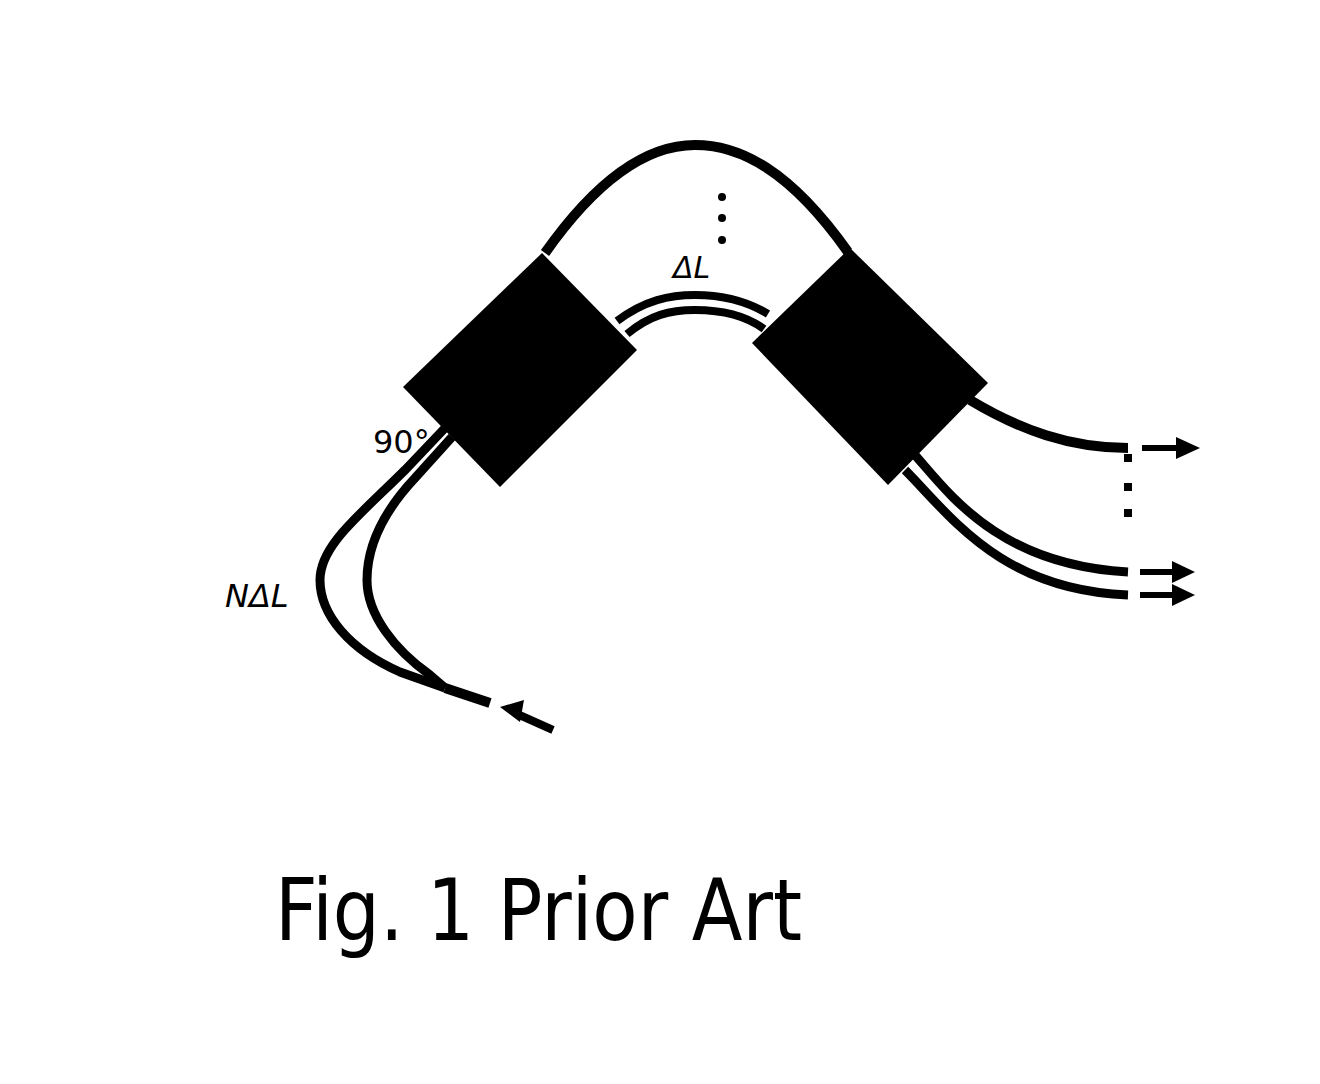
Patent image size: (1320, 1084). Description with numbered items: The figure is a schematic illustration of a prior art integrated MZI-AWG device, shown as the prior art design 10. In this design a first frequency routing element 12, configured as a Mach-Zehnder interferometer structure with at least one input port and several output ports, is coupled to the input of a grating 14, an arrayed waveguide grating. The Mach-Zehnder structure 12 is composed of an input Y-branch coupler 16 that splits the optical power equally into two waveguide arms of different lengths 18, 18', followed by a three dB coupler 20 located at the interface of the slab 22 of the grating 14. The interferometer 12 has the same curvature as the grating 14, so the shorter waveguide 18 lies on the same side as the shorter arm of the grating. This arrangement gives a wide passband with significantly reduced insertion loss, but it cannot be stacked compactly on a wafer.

The prior art design 10 is at (1108, 232).
The first frequency routing element 12 is at (278, 671).
The grating 14 is at (718, 132).
The input Y-branch coupler 16 is at (450, 693).
The shorter waveguide arm 18 is at (412, 562).
The longer waveguide arm 18' is at (319, 558).
The 3 dB coupler 20 is at (428, 467).
The slab 22 is at (475, 313).